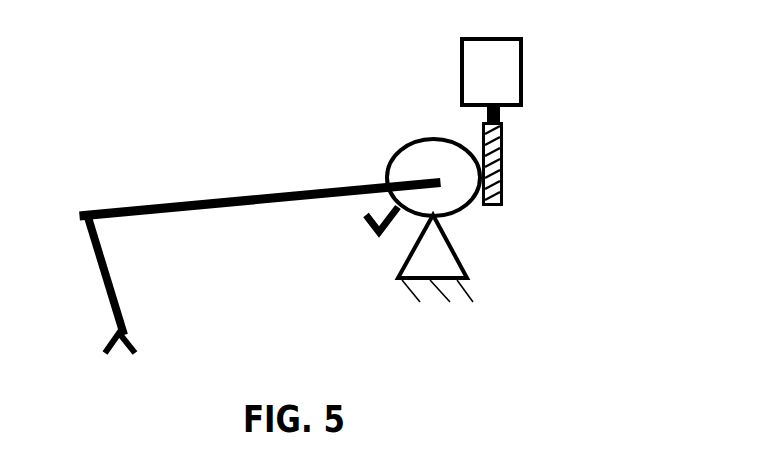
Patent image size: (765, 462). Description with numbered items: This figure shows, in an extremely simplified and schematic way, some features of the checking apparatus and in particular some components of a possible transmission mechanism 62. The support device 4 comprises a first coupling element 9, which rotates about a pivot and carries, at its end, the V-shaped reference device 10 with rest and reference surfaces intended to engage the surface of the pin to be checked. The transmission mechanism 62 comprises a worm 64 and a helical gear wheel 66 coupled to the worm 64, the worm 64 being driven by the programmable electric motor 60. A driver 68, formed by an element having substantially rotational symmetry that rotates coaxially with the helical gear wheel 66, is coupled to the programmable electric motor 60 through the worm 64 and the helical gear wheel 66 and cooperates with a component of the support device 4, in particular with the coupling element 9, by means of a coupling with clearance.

The support device 4 is at (138, 175).
The first coupling element 9 is at (287, 190).
The reference device 10 is at (113, 340).
The programmable electric motor 60 is at (485, 82).
The transmission mechanism 62 is at (519, 238).
The worm 64 is at (503, 180).
The helical gear wheel 66 is at (433, 158).
The driver 68 is at (372, 232).